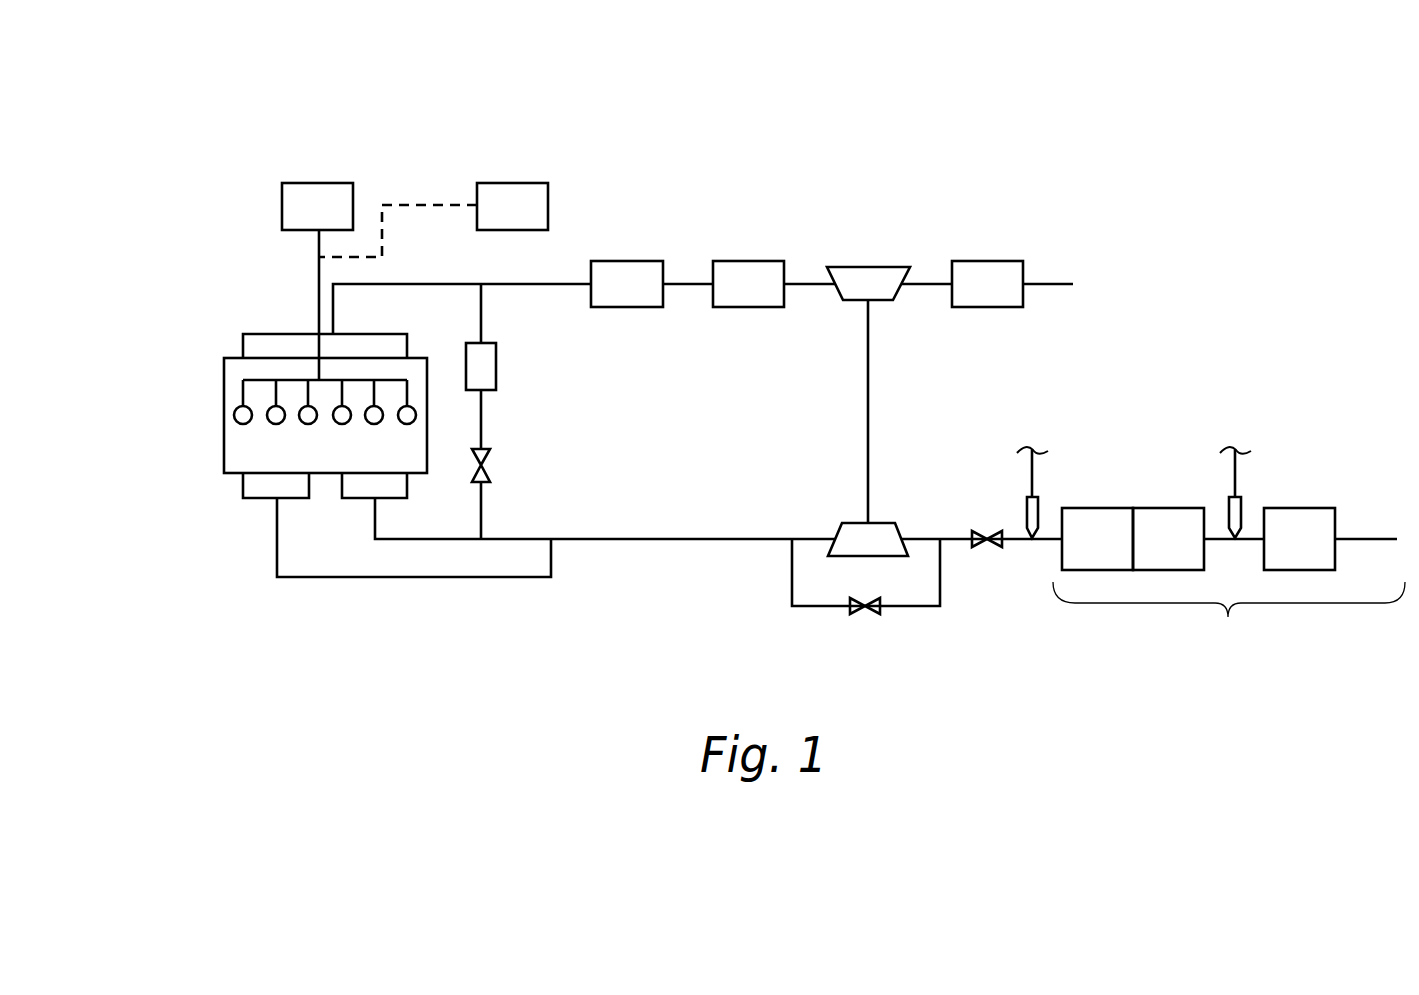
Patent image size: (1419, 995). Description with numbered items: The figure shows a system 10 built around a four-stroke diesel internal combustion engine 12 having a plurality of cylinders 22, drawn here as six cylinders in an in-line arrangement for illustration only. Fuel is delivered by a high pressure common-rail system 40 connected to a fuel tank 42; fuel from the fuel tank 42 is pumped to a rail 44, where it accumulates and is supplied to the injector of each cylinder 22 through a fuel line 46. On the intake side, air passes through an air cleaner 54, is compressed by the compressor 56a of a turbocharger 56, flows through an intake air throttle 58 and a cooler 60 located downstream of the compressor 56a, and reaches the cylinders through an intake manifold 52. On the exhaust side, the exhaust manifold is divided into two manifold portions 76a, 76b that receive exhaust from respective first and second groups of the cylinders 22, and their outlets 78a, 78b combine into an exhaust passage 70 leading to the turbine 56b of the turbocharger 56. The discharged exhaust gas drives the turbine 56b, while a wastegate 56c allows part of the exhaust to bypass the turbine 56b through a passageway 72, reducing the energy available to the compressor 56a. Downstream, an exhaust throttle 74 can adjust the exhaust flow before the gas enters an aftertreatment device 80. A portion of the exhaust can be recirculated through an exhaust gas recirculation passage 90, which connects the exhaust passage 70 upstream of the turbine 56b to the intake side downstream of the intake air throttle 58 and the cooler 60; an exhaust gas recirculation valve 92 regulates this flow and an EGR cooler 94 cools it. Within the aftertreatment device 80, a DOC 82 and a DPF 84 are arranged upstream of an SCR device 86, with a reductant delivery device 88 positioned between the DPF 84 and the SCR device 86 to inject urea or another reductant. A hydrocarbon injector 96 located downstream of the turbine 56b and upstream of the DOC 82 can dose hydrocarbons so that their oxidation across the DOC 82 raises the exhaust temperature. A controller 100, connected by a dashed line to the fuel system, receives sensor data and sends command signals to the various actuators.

The system 10 is at (1140, 150).
The internal combustion engine 12 is at (180, 437).
The cylinders 22 is at (235, 405).
The high pressure common-rail system 40 is at (252, 262).
The fuel tank 42 is at (305, 219).
The rail 44 is at (352, 380).
The fuel line 46 is at (242, 392).
The intake manifold 52 is at (257, 334).
The air cleaner 54 is at (975, 297).
The turbocharger 56 is at (843, 353).
The compressor 56a is at (853, 267).
The turbine 56b is at (852, 523).
The wastegate 56c is at (872, 615).
The intake air throttle 58 is at (736, 297).
The cooler 60 is at (615, 297).
The exhaust passage 70 is at (610, 540).
The passageway 72 is at (805, 608).
The exhaust throttle 74 is at (982, 532).
The exhaust manifold portion 76a is at (258, 498).
The exhaust manifold portion 76b is at (357, 498).
The outlet 78a is at (363, 577).
The outlet 78b is at (393, 540).
The aftertreatment device 80 is at (1229, 617).
The DOC 82 is at (1085, 552).
The DPF 84 is at (1156, 552).
The SCR device 86 is at (1287, 552).
The reductant delivery device 88 is at (1242, 503).
The exhaust gas recirculation passage 90 is at (505, 516).
The exhaust gas recirculation valve 92 is at (490, 467).
The EGR cooler 94 is at (500, 368).
The hydrocarbon injector 96 is at (1038, 500).
The controller 100 is at (493, 219).